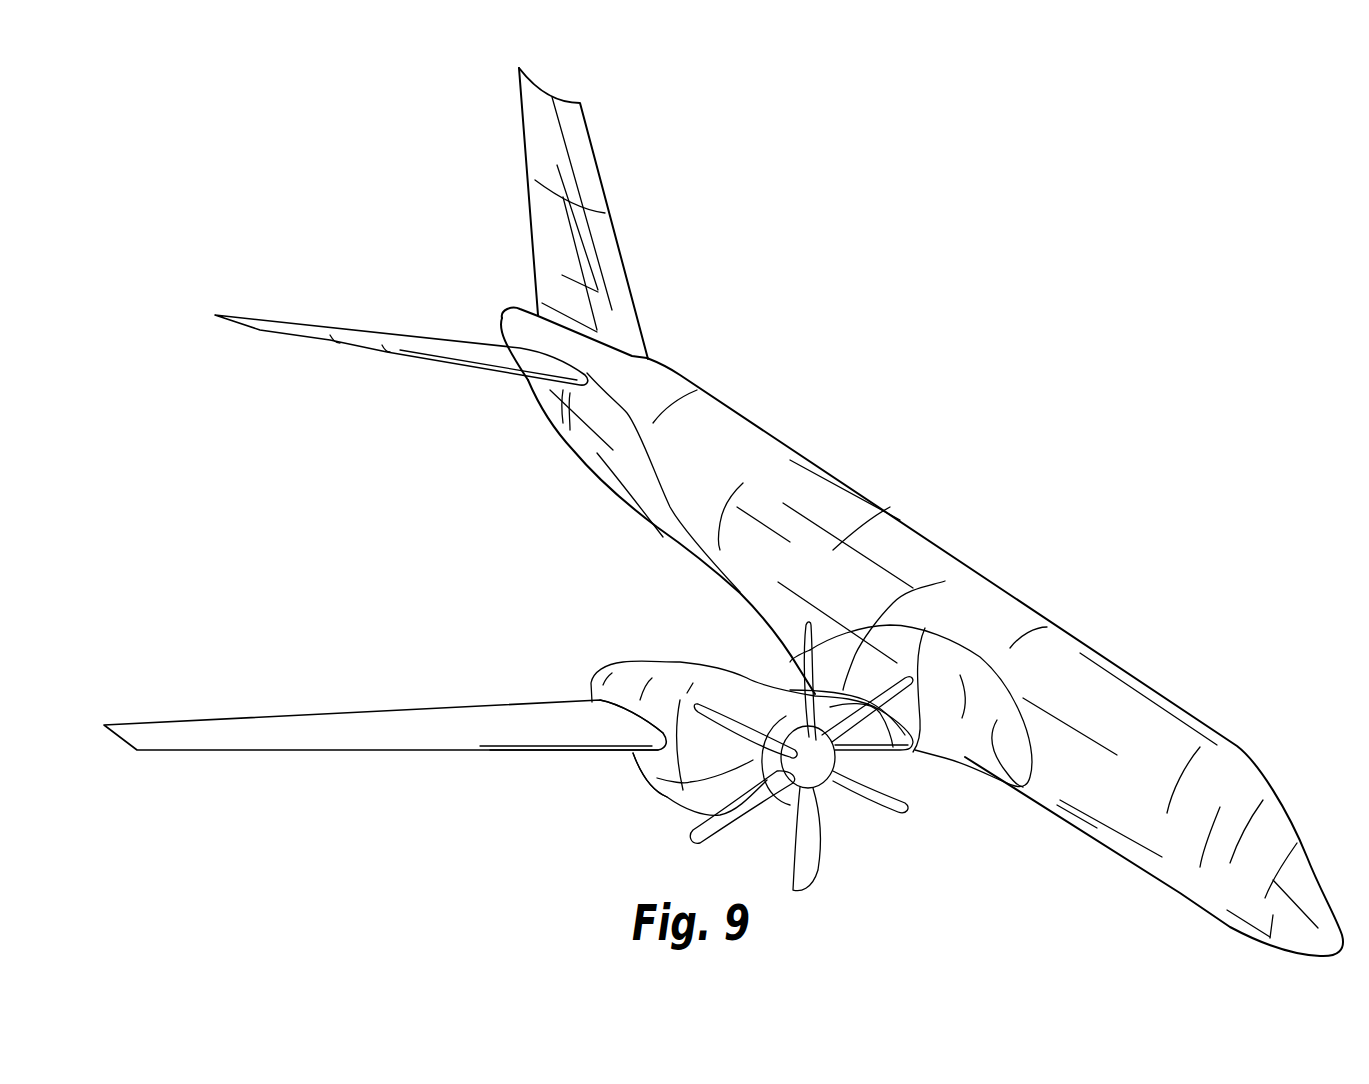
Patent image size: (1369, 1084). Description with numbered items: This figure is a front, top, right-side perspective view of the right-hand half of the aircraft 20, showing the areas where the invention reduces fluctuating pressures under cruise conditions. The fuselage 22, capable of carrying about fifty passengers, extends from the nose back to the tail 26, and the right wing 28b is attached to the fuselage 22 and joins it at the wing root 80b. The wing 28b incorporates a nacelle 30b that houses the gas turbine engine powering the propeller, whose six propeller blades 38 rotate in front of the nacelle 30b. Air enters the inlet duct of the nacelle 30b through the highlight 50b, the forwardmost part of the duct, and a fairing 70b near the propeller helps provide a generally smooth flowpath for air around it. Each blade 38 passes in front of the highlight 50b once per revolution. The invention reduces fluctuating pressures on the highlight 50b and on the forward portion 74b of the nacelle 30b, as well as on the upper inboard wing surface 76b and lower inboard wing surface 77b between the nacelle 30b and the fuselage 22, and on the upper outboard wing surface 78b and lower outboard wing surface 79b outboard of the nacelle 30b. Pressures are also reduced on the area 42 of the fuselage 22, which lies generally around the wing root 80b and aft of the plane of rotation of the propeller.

The aircraft 20 is at (958, 380).
The fuselage 22 is at (1077, 677).
The tail 26 is at (520, 383).
The right wing 28b is at (337, 740).
The nacelle 30b is at (623, 677).
The propeller blade 38 is at (718, 721).
The area of fuselage 42 is at (1027, 790).
The highlight 50b is at (783, 810).
The fairing 70b is at (780, 720).
The forward portion of nacelle 74b is at (657, 780).
The upper inboard wing surface 76b is at (893, 747).
The lower inboard wing surface 77b is at (853, 752).
The upper outboard wing surface 78b is at (622, 722).
The lower outboard wing surface 79b is at (617, 763).
The wing root 80b is at (945, 581).